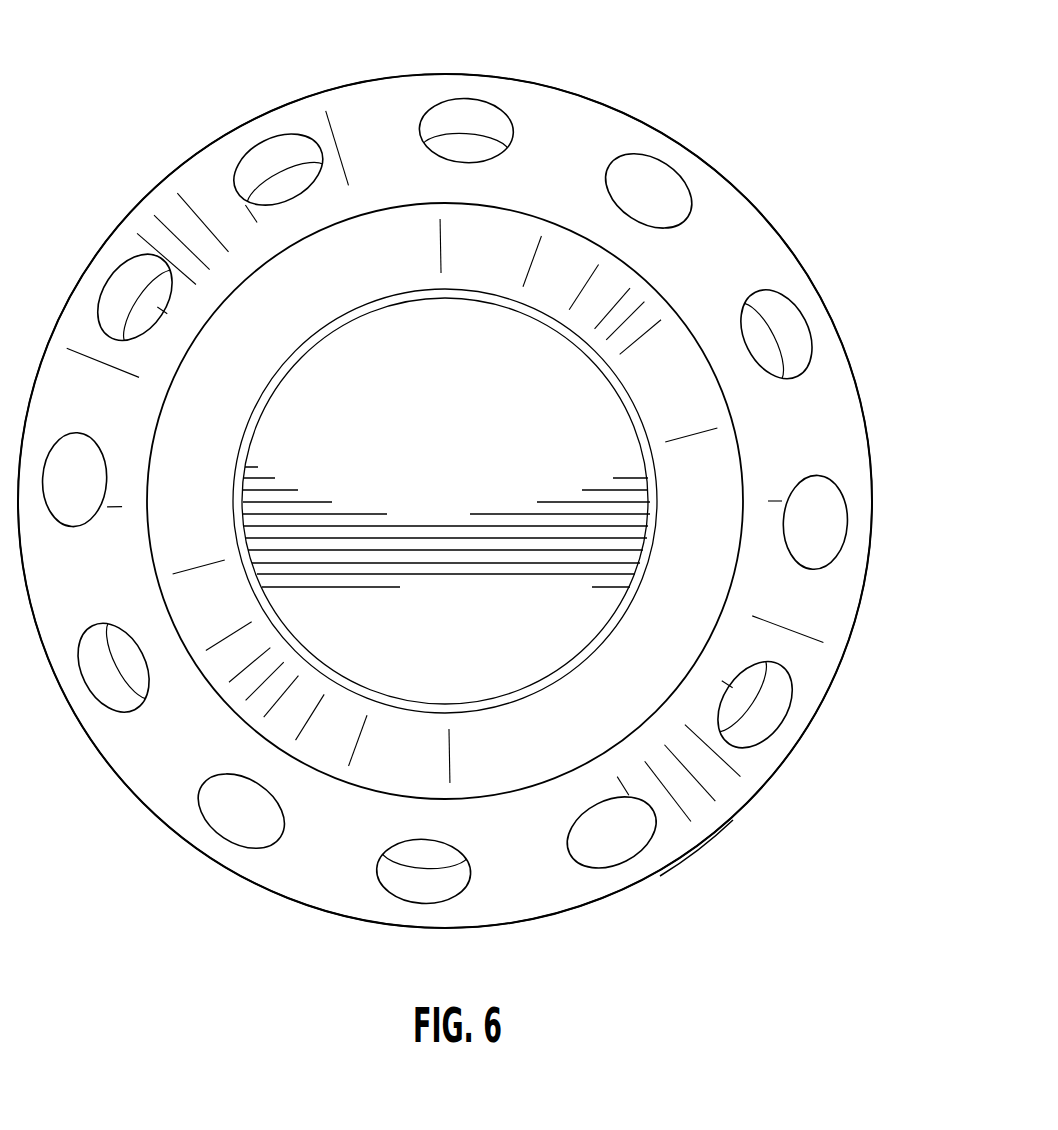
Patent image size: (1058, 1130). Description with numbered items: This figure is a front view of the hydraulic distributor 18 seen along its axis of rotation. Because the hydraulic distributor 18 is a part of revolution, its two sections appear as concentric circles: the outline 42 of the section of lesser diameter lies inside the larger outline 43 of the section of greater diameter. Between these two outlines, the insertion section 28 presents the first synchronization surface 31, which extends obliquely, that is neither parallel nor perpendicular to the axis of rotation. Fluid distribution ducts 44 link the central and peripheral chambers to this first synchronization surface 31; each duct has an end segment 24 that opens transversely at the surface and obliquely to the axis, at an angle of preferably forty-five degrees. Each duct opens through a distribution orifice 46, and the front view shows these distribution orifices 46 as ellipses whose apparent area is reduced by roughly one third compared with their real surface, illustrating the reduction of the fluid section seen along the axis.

The hydraulic distributor 18 is at (823, 225).
The outline of the section of greater diameter 43 is at (592, 99).
The outline of the section of lesser diameter 42 is at (537, 213).
The distribution orifice 46 is at (818, 478).
The first synchronization surface 31 is at (810, 610).
The insertion section 28 is at (734, 824).
The fluid distribution duct 44 is at (230, 812).
The end segment 24 is at (418, 884).